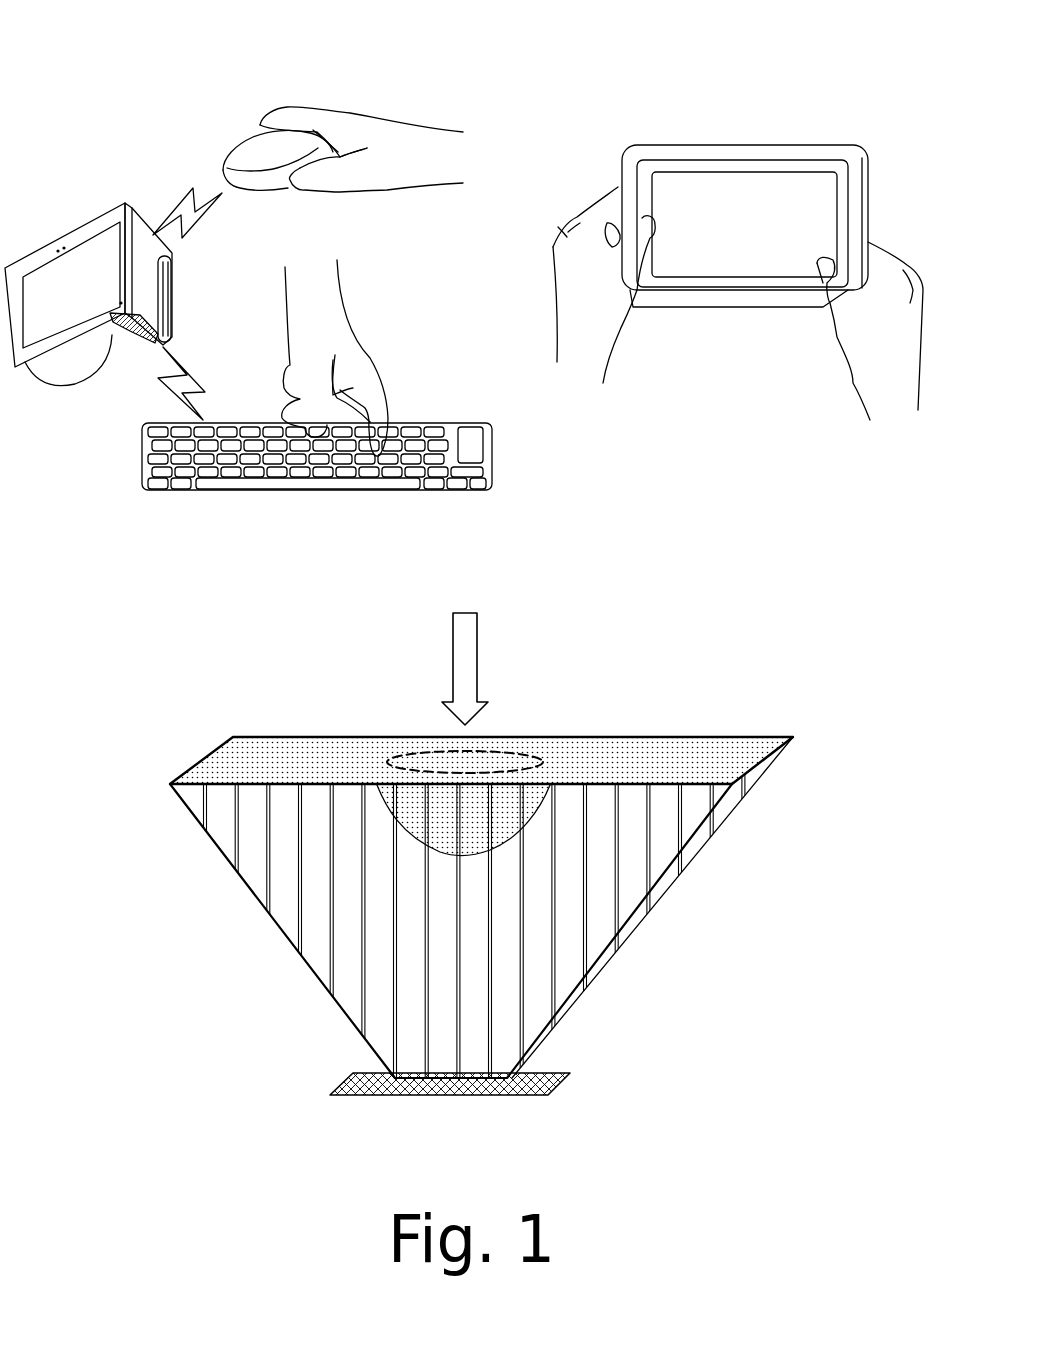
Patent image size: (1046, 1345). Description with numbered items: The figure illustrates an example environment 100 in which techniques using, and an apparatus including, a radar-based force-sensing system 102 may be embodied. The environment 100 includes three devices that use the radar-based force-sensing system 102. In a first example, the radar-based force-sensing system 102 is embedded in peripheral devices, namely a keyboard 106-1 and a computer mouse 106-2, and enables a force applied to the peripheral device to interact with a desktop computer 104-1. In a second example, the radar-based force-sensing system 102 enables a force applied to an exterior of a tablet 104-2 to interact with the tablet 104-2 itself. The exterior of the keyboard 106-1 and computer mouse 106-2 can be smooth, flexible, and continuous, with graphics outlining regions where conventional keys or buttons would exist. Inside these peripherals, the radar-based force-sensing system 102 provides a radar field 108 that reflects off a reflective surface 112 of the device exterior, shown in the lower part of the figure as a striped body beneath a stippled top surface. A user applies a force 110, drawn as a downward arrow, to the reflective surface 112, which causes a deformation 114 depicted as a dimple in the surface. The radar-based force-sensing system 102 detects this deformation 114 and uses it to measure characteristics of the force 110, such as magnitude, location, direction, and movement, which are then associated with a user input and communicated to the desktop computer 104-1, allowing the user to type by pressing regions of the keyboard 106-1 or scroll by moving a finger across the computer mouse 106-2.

The environment 100 is at (145, 45).
The desktop computer 104-1 is at (177, 305).
The tablet 104-2 is at (767, 145).
The keyboard 106-1 is at (403, 423).
The computer mouse 106-2 is at (252, 142).
The radar-based force-sensing system 102 is at (450, 1095).
The radar field 108 is at (503, 1023).
The force 110 is at (478, 678).
The reflective surface 112 is at (750, 752).
The deformation 114 is at (380, 822).